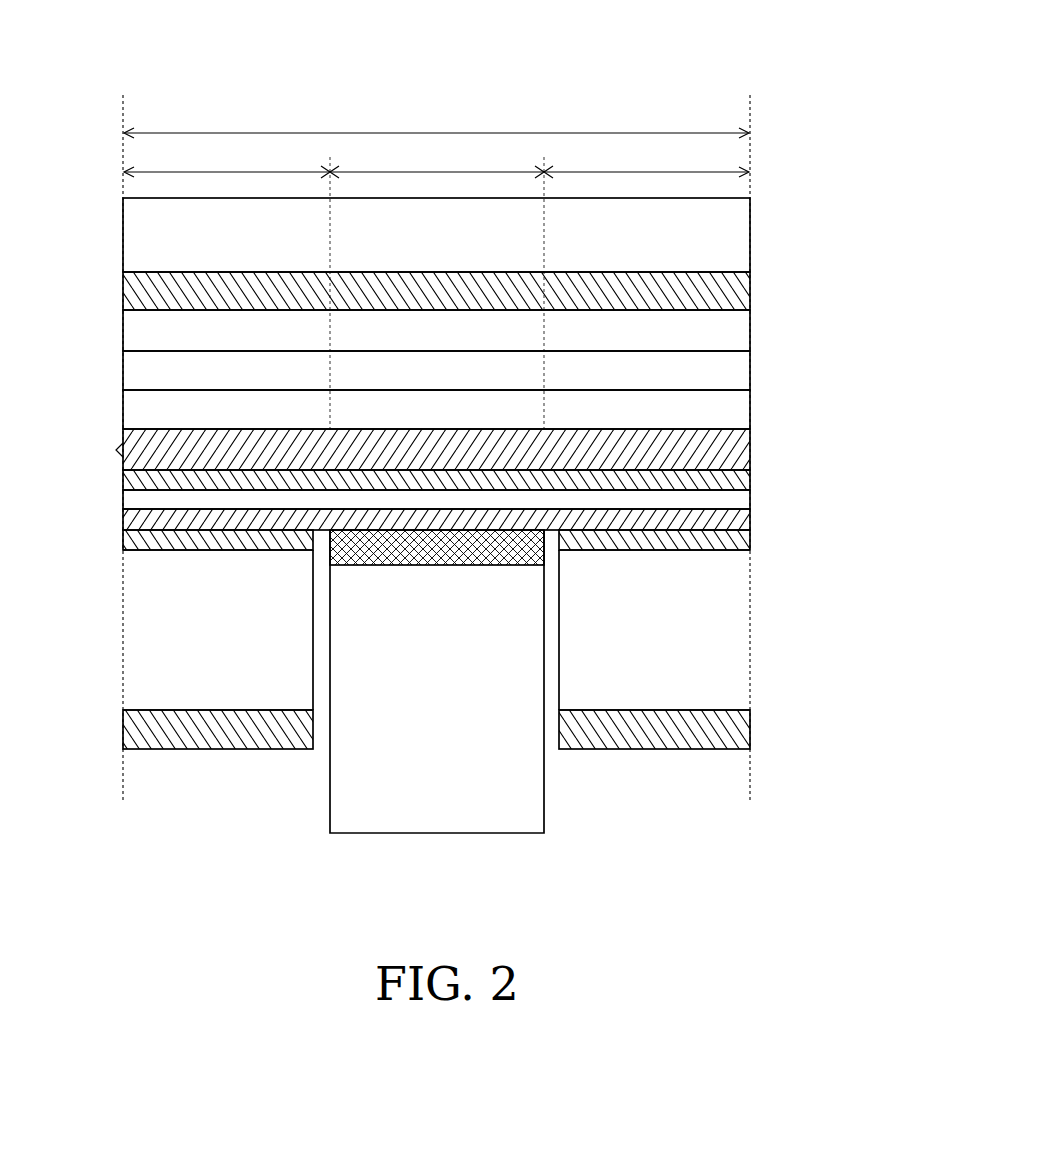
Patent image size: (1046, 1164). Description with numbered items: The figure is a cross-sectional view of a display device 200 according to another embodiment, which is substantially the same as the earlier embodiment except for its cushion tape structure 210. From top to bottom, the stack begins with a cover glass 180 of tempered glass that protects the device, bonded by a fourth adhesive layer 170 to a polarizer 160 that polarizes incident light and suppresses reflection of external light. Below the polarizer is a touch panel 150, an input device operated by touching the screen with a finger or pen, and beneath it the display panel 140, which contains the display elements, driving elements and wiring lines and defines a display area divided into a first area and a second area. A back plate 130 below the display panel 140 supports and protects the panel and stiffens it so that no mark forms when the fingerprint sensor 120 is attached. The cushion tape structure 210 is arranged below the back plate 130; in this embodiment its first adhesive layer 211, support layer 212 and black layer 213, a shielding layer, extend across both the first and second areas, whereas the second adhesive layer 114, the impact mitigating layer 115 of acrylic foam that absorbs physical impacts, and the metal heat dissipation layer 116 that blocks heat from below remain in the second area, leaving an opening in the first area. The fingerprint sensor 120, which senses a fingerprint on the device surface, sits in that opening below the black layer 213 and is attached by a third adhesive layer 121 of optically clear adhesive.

The display device 200 is at (724, 44).
The cover glass 180 is at (730, 236).
The fourth adhesive layer 170 is at (730, 286).
The polarizer 160 is at (730, 330).
The touch panel 150 is at (730, 369).
The display panel 140 is at (730, 410).
The back plate 130 is at (730, 452).
The cushion tape structure 210 is at (820, 478).
The first adhesive layer 211 is at (730, 480).
The support layer 212 is at (730, 500).
The black layer 213 is at (730, 520).
The second adhesive layer 114 is at (730, 540).
The impact mitigating layer 115 is at (730, 654).
The heat dissipation layer 116 is at (730, 733).
The fingerprint sensor 120 is at (355, 627).
The third adhesive layer 121 is at (355, 547).